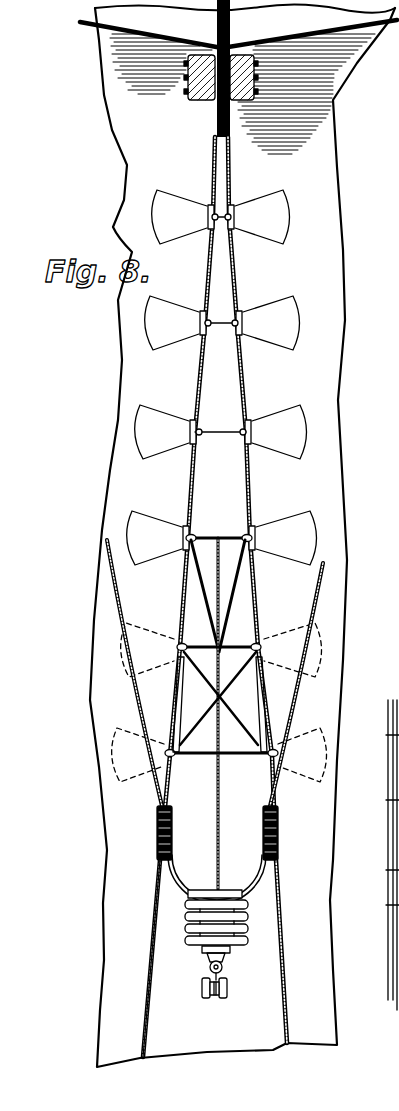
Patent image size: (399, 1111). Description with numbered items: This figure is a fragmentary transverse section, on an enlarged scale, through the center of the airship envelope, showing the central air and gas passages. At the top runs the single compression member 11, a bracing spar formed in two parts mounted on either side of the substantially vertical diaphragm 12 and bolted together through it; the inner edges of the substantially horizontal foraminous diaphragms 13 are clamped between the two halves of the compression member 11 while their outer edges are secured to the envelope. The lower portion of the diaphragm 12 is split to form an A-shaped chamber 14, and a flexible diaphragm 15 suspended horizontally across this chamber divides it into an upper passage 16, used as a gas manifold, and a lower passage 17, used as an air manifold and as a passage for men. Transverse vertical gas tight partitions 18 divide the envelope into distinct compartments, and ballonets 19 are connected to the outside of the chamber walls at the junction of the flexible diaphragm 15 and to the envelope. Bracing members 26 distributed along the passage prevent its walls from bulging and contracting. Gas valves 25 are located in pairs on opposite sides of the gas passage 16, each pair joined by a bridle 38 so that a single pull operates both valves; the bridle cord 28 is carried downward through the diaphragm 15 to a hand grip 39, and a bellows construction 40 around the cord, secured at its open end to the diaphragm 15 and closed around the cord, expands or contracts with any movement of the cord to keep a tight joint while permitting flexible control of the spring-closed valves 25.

The compression member 11 is at (193, 102).
The vertical diaphragm 12 is at (230, 15).
The horizontal foraminous diaphragms 13 is at (167, 43).
The A-shaped chamber 14 is at (152, 1028).
The flexible diaphragm 15 is at (175, 868).
The upper passage 16 is at (173, 971).
The lower passage 17 is at (212, 532).
The transverse vertical gas tight partitions 18 is at (327, 137).
The ballonets 19 is at (127, 595).
The gas valves 25 is at (167, 703).
The bracing members 26 is at (220, 321).
The bridle cord 28 is at (221, 714).
The bridle 38 is at (205, 586).
The hand grip 39 is at (228, 978).
The bellows construction 40 is at (187, 920).